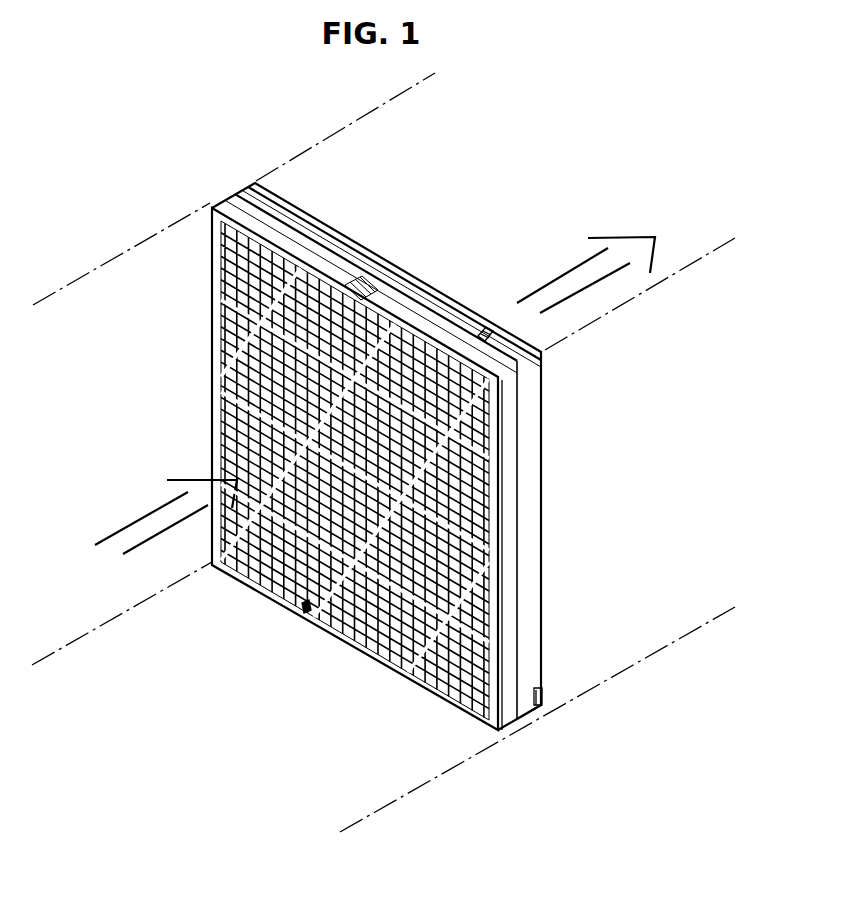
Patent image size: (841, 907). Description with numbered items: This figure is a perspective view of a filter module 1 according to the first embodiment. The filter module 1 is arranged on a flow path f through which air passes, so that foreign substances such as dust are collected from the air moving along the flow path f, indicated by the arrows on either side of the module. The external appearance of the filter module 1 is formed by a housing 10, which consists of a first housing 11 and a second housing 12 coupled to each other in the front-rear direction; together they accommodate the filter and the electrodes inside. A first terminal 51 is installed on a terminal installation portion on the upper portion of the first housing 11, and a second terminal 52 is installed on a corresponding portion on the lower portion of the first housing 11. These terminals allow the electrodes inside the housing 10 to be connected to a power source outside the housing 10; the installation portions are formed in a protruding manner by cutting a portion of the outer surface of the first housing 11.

The filter module 1 is at (377, 447).
The housing 10 is at (377, 454).
The first housing 11 is at (446, 300).
The second housing 12 is at (386, 300).
The first terminal 51 is at (479, 326).
The second terminal 52 is at (304, 606).
The flow path f is at (380, 748).